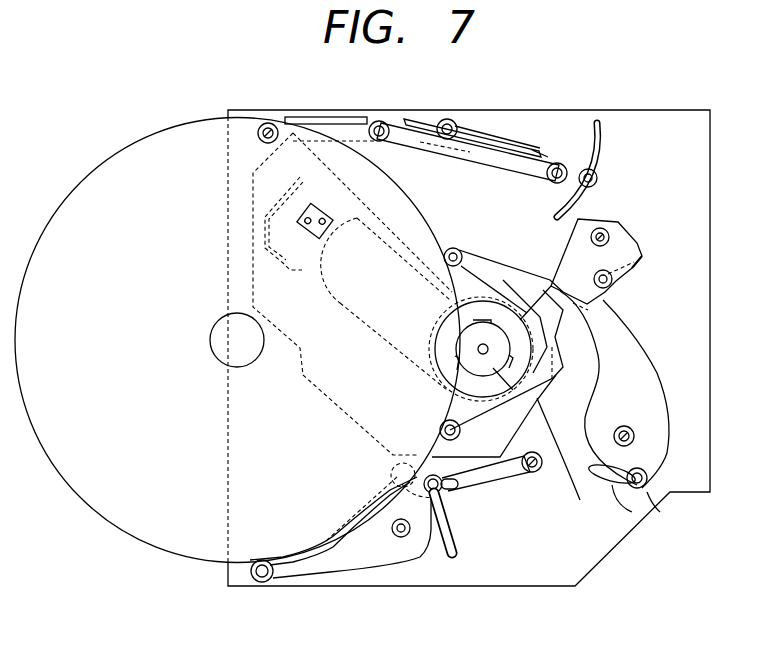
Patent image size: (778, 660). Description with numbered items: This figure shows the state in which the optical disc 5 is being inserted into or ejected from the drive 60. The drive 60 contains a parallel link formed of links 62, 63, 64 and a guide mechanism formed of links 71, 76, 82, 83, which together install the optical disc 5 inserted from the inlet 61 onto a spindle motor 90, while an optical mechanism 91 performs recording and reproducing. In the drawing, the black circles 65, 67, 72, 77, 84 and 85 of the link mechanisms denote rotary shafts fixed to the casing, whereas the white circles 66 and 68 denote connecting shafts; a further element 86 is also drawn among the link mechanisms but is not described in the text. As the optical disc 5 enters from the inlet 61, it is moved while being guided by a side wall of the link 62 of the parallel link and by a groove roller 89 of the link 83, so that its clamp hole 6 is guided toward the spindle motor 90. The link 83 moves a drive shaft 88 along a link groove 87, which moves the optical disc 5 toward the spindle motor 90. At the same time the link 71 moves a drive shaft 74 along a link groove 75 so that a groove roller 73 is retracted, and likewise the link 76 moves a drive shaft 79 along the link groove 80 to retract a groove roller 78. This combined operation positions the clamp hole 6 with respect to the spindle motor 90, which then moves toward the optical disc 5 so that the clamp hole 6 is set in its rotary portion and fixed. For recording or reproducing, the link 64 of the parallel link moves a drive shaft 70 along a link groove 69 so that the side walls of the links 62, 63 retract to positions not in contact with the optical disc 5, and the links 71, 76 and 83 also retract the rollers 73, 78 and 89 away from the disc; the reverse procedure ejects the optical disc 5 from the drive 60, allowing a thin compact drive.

The optical disc 5 is at (103, 172).
The clamp hole 6 is at (211, 336).
The drive 60 is at (657, 110).
The inlet 61 is at (228, 490).
The link 62 is at (336, 117).
The link 63 is at (437, 142).
The link 64 is at (493, 127).
The rotary shaft 65 is at (268, 122).
The connecting shaft 66 is at (381, 140).
The rotary shaft 67 is at (449, 118).
The connecting shaft 68 is at (557, 162).
The link groove 69 is at (603, 153).
The drive shaft 70 is at (601, 182).
The link 71 is at (640, 243).
The rotary shaft 72 is at (615, 220).
The groove roller 73 is at (503, 458).
The drive shaft 74 is at (608, 284).
The link groove 75 is at (637, 262).
The link 76 is at (653, 398).
The rotary shaft 77 is at (635, 436).
The groove roller 78 is at (461, 251).
The drive shaft 79 is at (647, 498).
The link groove 80 is at (618, 486).
The link 82 is at (540, 468).
The link 83 is at (337, 566).
The rotary shaft 84 is at (580, 500).
The rotary shaft 85 is at (401, 538).
The link 86 is at (510, 476).
The link groove 87 is at (451, 560).
The drive shaft 88 is at (431, 495).
The groove roller 89 is at (262, 583).
The spindle motor 90 is at (612, 495).
The optical mechanism 91 is at (302, 219).